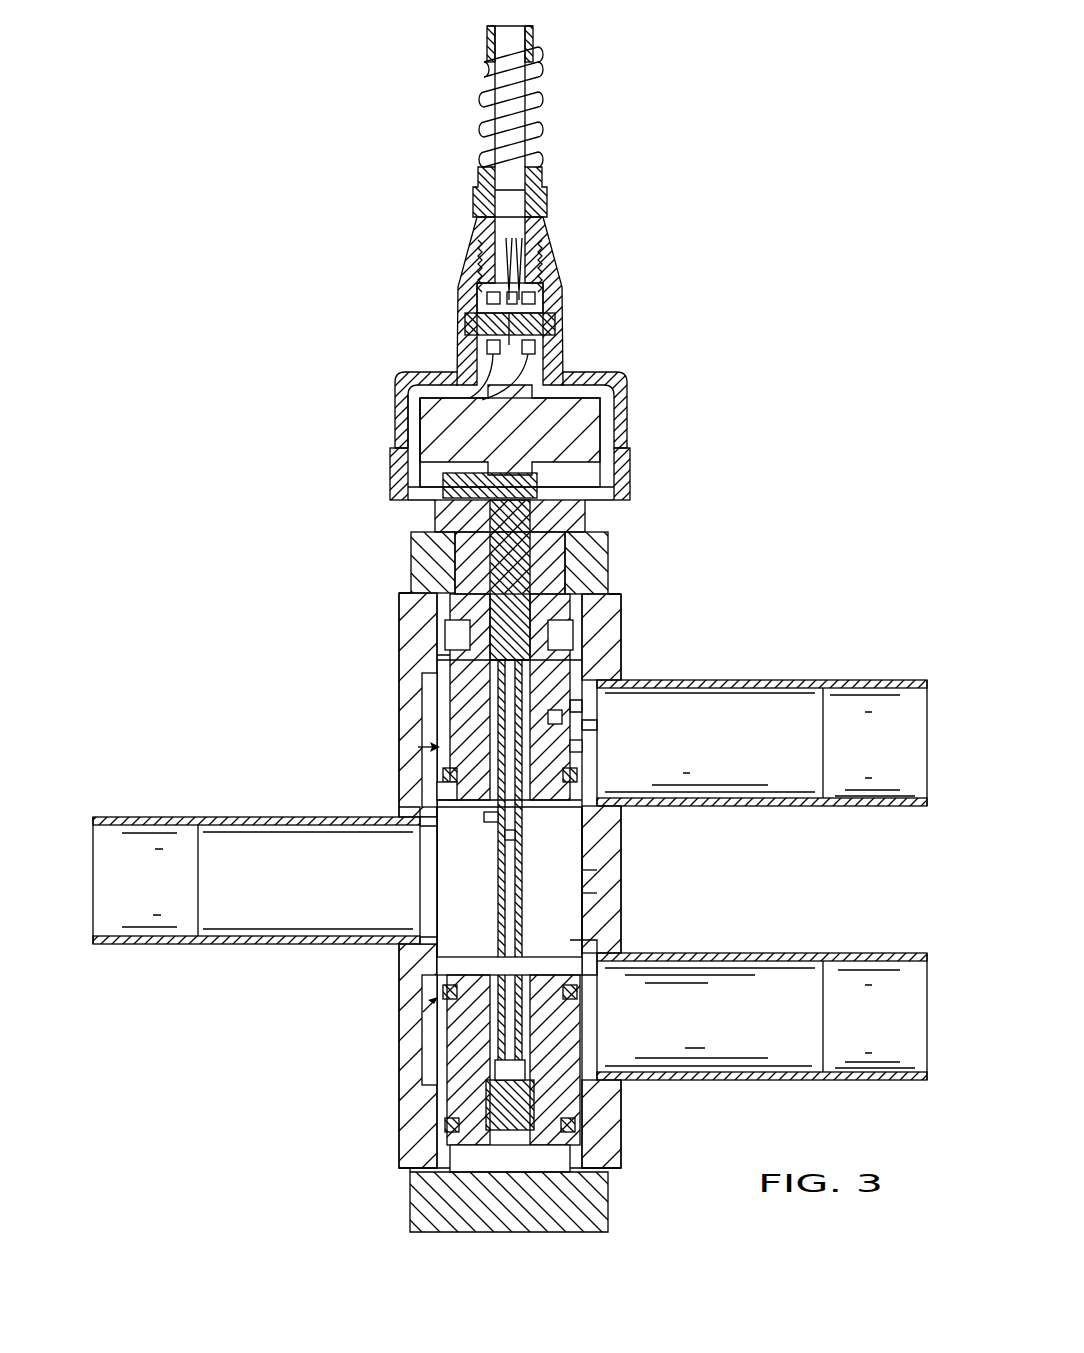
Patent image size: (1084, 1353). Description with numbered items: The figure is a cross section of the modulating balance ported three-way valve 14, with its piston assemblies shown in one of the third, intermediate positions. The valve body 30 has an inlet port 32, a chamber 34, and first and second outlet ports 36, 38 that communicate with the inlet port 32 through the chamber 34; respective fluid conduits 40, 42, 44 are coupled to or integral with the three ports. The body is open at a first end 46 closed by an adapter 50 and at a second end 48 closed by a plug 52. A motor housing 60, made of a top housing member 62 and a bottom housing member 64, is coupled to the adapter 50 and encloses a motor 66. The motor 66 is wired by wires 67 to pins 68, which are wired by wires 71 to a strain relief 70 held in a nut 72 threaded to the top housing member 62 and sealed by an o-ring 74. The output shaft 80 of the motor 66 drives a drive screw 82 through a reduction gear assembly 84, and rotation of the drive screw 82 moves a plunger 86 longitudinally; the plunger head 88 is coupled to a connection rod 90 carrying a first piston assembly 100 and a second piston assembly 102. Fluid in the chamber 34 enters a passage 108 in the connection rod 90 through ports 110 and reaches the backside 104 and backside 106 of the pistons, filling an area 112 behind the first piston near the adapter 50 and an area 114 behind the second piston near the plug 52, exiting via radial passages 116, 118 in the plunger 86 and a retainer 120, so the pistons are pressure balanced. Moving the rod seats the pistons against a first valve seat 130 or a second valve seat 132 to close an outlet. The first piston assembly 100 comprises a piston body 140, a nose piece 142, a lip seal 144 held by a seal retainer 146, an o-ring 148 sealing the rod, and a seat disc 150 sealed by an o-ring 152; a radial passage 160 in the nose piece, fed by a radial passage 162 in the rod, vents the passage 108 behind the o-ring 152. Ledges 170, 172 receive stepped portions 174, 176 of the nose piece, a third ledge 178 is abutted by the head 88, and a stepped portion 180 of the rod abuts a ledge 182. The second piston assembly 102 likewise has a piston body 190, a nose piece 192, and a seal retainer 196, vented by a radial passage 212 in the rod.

The valve 14 is at (826, 289).
The valve body 30 is at (398, 700).
The inlet port 32 is at (402, 814).
The chamber 34 is at (482, 915).
The first outlet port 36 is at (625, 680).
The second outlet port 38 is at (597, 1105).
The fluid conduit 40 is at (150, 817).
The fluid conduit 42 is at (877, 680).
The fluid conduit 44 is at (742, 1082).
The first end 46 is at (408, 585).
The second end 48 is at (612, 1170).
The adapter 50 is at (600, 545).
The plug 52 is at (608, 1230).
The motor housing 60 is at (636, 413).
The top housing member 62 is at (618, 370).
The bottom housing member 64 is at (628, 498).
The motor 66 is at (410, 405).
The wires 67 is at (478, 352).
The pins 68 is at (525, 296).
The strain relief 70 is at (540, 98).
The wires 71 is at (548, 218).
The nut 72 is at (462, 290).
The o-ring 74 is at (548, 313).
The output shaft 80 is at (500, 462).
The drive screw 82 is at (540, 600).
The reduction gear assembly 84 is at (592, 478).
The plunger 86 is at (445, 628).
The head 88 is at (398, 703).
The connection rod 90 is at (585, 930).
The first piston assembly 100 is at (428, 746).
The second piston assembly 102 is at (430, 1008).
The backside 104 is at (468, 512).
The backside 106 is at (450, 1195).
The passage 108 is at (584, 880).
The ports 110 is at (585, 893).
The area 112 is at (548, 628).
The area 114 is at (533, 1165).
The radial passage 116 is at (562, 660).
The radial passage 118 is at (455, 1127).
The retainer 120 is at (507, 1122).
The first valve seat 130 is at (600, 835).
The second valve seat 132 is at (588, 985).
The piston body 140 is at (597, 725).
The nose piece 142 is at (437, 832).
The seal 144 is at (437, 657).
The seal retainer 146 is at (440, 638).
The o-ring 148 is at (484, 820).
The seat disc 150 is at (438, 790).
The o-ring 152 is at (445, 770).
The radial passage 160 is at (458, 803).
The radial passage 162 is at (522, 790).
The first ledge 170 is at (582, 746).
The second ledge 172 is at (562, 718).
The stepped portion 174 is at (577, 774).
The stepped portion 176 is at (445, 740).
The third ledge 178 is at (582, 705).
The stepped portion 180 is at (514, 840).
The ledge 182 is at (440, 855).
The piston body 190 is at (557, 1027).
The nose piece 192 is at (445, 962).
The seal retainer 196 is at (585, 1138).
The radial passage 212 is at (437, 1082).